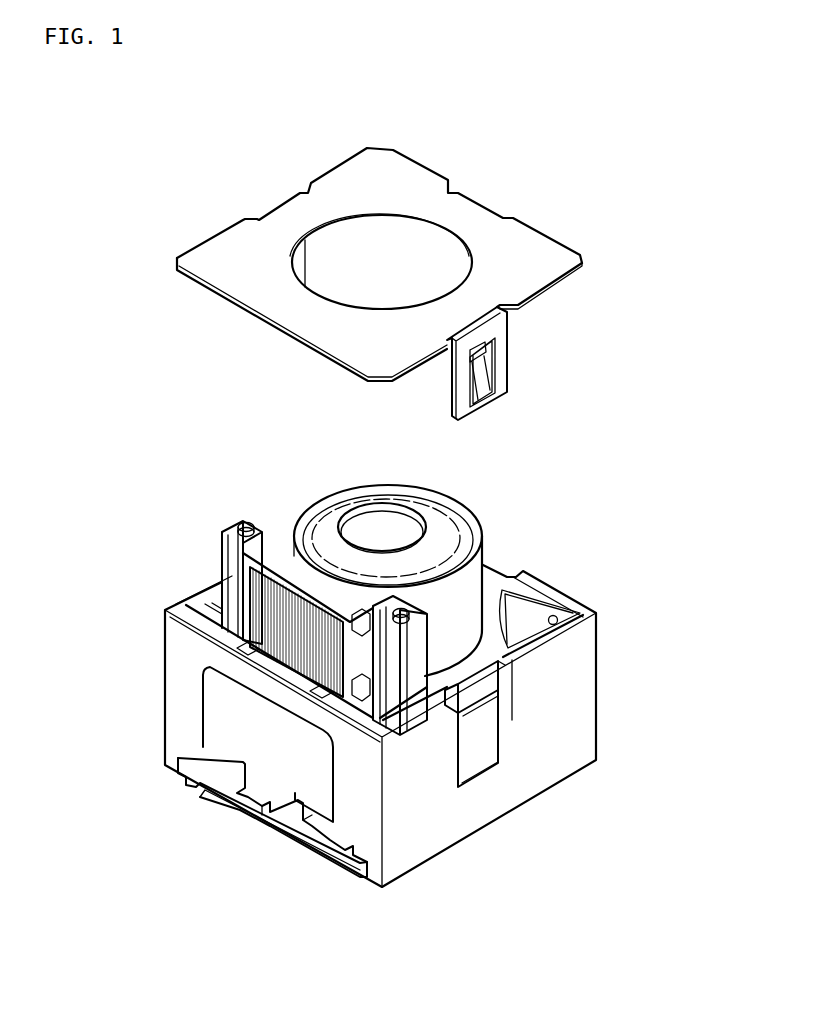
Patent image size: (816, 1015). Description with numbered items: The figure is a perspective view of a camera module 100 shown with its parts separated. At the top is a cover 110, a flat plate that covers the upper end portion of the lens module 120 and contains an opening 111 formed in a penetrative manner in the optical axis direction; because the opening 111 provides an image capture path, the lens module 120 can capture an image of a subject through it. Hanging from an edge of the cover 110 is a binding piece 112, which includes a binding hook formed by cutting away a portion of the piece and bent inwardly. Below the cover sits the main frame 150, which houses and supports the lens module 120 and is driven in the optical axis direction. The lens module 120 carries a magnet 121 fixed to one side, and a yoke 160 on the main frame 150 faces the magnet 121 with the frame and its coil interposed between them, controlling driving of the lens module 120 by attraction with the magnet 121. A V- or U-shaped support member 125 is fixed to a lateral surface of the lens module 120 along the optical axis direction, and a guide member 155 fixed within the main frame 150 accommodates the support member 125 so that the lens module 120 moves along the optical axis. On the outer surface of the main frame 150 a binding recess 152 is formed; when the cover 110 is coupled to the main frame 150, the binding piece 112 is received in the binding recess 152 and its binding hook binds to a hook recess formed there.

The camera module 100 is at (68, 124).
The cover 110 is at (548, 243).
The opening 111 is at (353, 238).
The binding piece 112 is at (503, 349).
The lens module 120 is at (473, 511).
The magnet 121 is at (277, 617).
The support member 125 is at (230, 565).
The main frame 150 is at (597, 673).
The binding recess 152 is at (483, 743).
The guide member 155 is at (220, 623).
The yoke 160 is at (230, 742).